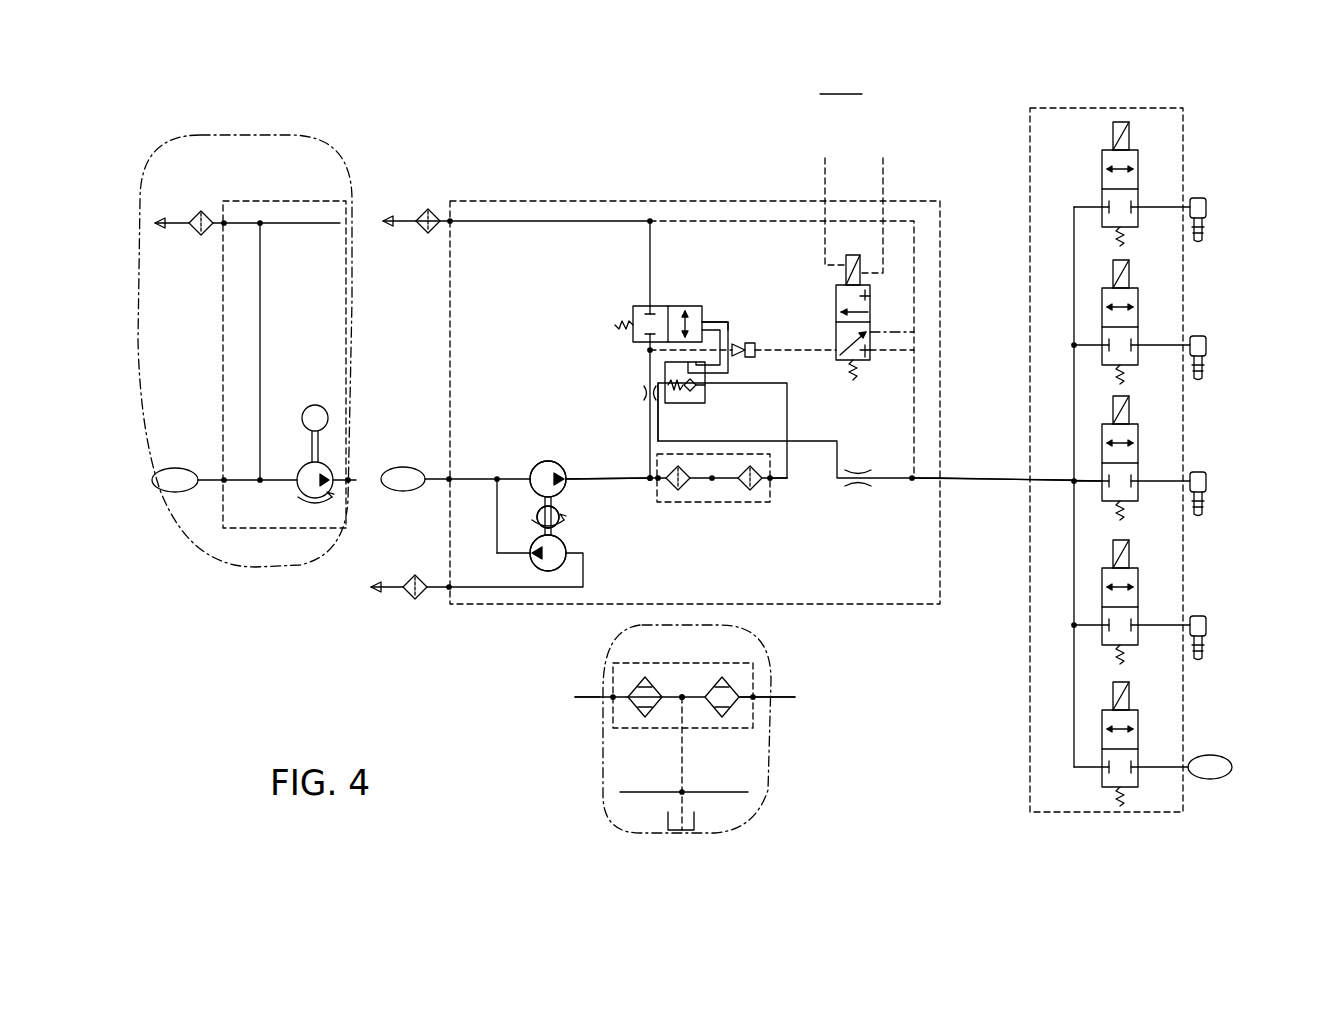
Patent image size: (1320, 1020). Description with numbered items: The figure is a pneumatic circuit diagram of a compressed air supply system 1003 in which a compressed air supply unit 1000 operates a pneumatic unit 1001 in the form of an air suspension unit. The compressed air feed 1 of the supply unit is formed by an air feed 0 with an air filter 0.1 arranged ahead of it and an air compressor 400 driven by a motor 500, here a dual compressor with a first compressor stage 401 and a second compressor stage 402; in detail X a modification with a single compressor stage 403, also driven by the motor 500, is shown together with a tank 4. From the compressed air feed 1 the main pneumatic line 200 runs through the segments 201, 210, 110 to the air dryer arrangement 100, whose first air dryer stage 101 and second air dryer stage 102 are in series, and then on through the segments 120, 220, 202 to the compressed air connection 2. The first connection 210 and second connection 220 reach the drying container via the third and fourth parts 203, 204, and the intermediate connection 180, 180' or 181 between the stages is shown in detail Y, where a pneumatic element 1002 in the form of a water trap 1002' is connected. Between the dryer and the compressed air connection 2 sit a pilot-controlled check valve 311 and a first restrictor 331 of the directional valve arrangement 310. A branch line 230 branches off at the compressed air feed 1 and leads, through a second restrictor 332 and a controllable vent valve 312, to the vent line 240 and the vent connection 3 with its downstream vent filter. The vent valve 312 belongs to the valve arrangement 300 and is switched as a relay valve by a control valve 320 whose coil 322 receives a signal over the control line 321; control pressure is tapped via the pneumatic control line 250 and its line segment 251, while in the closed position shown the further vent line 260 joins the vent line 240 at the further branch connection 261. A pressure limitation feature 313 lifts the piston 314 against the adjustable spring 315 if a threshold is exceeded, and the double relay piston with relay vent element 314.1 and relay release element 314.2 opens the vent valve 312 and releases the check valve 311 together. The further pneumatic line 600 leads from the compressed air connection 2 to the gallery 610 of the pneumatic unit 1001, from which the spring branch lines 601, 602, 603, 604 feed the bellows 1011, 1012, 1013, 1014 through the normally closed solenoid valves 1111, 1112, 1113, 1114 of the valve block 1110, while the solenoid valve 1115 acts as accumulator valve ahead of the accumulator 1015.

The detail X is at (320, 160).
The detail Y is at (602, 720).
The air feed 0 is at (448, 584).
The air filter 0.1 is at (198, 214).
The compressed air feed 1 is at (348, 476).
The compressed air connection 2 is at (988, 478).
The vent connection 3 is at (448, 218).
The reservoir / tank 4 is at (223, 476).
The air dryer arrangement 100 is at (720, 441).
The first air dryer stage 101 is at (672, 488).
The second air dryer stage 102 is at (751, 490).
The segment of the main pneumatic line 110 is at (662, 447).
The segment of the main pneumatic line 120 is at (767, 468).
The intermediate connection 180 is at (663, 521).
The intermediate connection 180' is at (601, 660).
The connection node 181 is at (601, 660).
The main pneumatic line 200 is at (790, 459).
The segment of the main pneumatic line 201 is at (650, 480).
The segment of the main pneumatic line 202 is at (772, 479).
The third part of the main pneumatic line 203 is at (535, 681).
The fourth part of the main pneumatic line 204 is at (799, 724).
The first connection 210 is at (648, 476).
The second connection 220 is at (772, 488).
The branch line 230 is at (648, 274).
The vent line 240 is at (254, 222).
The pneumatic control line 250 is at (892, 352).
The line segment of the control line 251 is at (820, 352).
The further vent line 260 is at (890, 280).
The further branch connection 261 is at (264, 226).
The valve arrangement 300 is at (794, 248).
The directional valve arrangement 310 is at (716, 300).
The pilot-controlled check valve 311 is at (665, 376).
The controllable vent valve 312 is at (662, 306).
The pressure limitation feature 313 is at (705, 337).
The piston 314 is at (753, 349).
The relay vent element 314.1 is at (711, 320).
The relay release element 314.2 is at (728, 363).
The adjustable spring 315 is at (615, 325).
The control valve 320 is at (834, 311).
The control line 321 is at (826, 176).
The coil 322 is at (852, 255).
The first restrictor 331 is at (858, 470).
The second restrictor 332 is at (644, 393).
The air compressor 400 is at (536, 453).
The first compressor stage 401 is at (530, 558).
The second compressor stage 402 is at (548, 460).
The single compressor stage 403 is at (298, 488).
The motor 500 is at (304, 403).
The further pneumatic line 600 is at (990, 480).
The spring branch line 601 is at (1092, 207).
The spring branch line 602 is at (1082, 341).
The spring branch line 603 is at (1082, 477).
The spring branch line 604 is at (1082, 621).
The gallery 610 is at (1075, 262).
The compressed air supply unit 1000 is at (650, 200).
The pneumatic unit 1001 is at (1190, 108).
The pneumatic element 1002 is at (639, 753).
The water trap 1002' is at (720, 834).
The pneumatic compressed air supply system 1003 is at (841, 82).
The bellows 1011 is at (1208, 206).
The bellows 1012 is at (1208, 344).
The bellows 1013 is at (1208, 480).
The bellows 1014 is at (1208, 622).
The accumulator 1015 is at (1210, 753).
The valve block 1110 is at (1184, 162).
The solenoid valve 1111 is at (1138, 168).
The solenoid valve 1112 is at (1138, 304).
The solenoid valve 1113 is at (1138, 440).
The solenoid valve 1114 is at (1138, 584).
The solenoid valve 1115 is at (1138, 728).